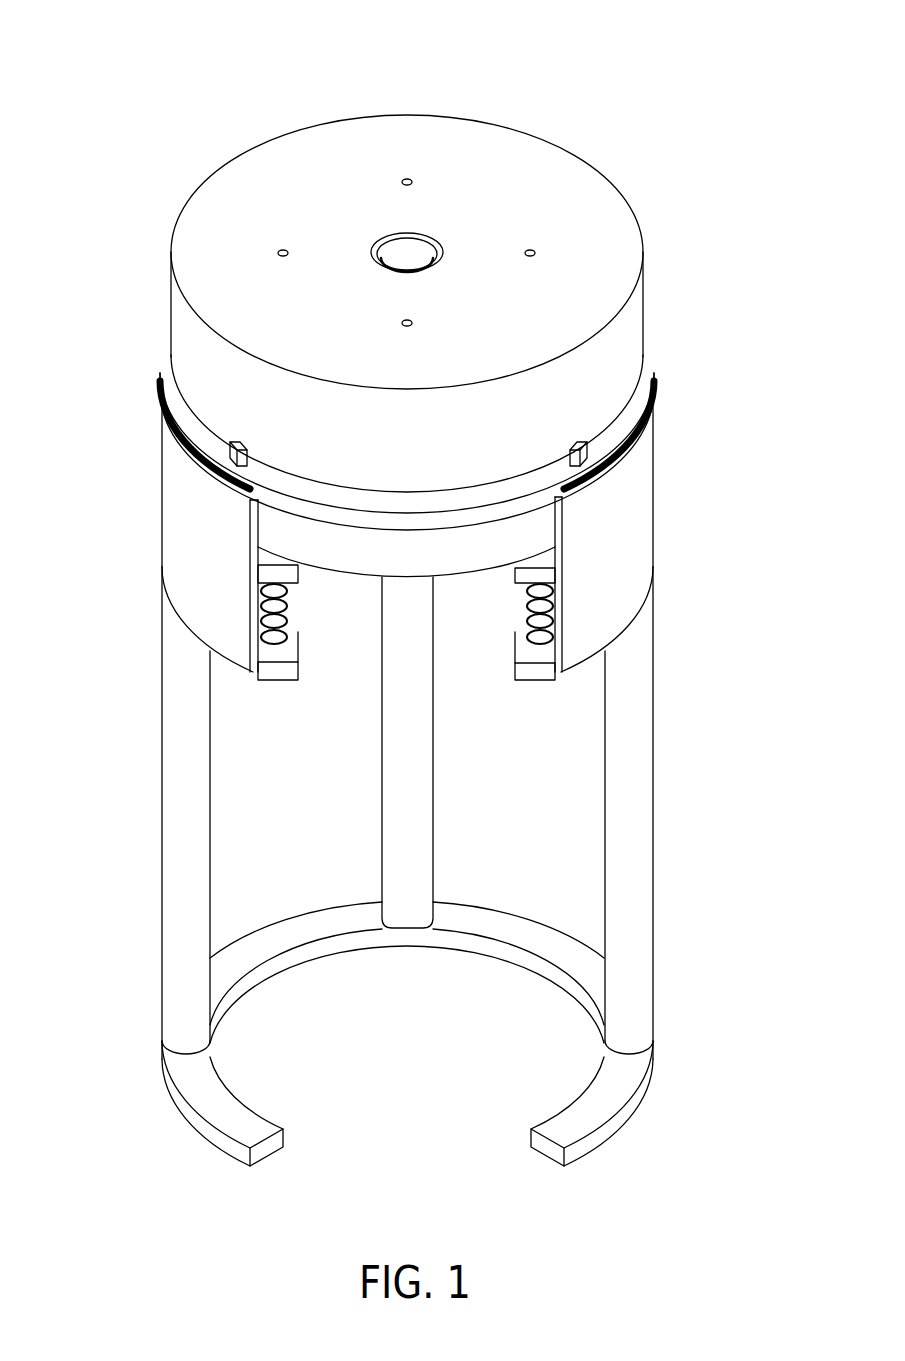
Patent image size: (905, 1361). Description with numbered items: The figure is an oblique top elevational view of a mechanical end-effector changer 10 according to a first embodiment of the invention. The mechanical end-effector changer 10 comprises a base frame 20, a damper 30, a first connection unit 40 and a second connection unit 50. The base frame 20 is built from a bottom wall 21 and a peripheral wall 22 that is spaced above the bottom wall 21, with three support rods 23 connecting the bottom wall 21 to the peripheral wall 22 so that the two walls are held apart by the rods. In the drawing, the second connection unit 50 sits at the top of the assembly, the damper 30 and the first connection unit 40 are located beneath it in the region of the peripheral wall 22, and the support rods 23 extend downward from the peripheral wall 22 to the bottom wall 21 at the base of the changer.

The mechanical end-effector changer 10 is at (658, 110).
The base frame 20 is at (760, 530).
The bottom wall 21 is at (624, 1083).
The peripheral wall 22 is at (614, 562).
The support rods 23 is at (633, 800).
The damper 30 is at (282, 688).
The first connection unit 40 is at (340, 574).
The second connection unit 50 is at (208, 178).